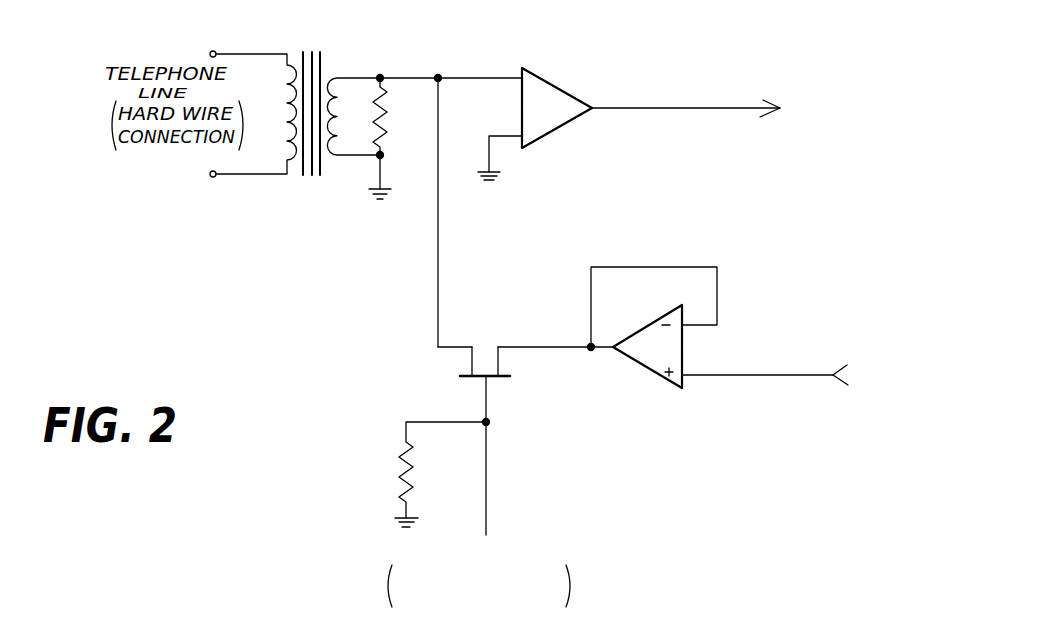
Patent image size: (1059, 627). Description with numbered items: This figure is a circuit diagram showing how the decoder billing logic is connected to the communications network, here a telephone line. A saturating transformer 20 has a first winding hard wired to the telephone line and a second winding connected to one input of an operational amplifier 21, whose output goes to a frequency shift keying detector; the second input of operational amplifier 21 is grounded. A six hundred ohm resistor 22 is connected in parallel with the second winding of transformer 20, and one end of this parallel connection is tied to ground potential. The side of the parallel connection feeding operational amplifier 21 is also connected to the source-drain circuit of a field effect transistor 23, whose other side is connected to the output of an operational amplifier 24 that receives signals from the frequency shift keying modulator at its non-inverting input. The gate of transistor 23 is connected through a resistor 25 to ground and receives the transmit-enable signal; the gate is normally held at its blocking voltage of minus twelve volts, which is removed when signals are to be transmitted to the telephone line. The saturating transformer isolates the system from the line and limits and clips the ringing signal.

The saturating transformer 20 is at (342, 38).
The operational amplifier 21 is at (570, 93).
The 600 ohm resistor 22 is at (363, 105).
The field effect transistor 23 is at (508, 363).
The operational amplifier 24 is at (653, 373).
The resistor 25 is at (397, 477).